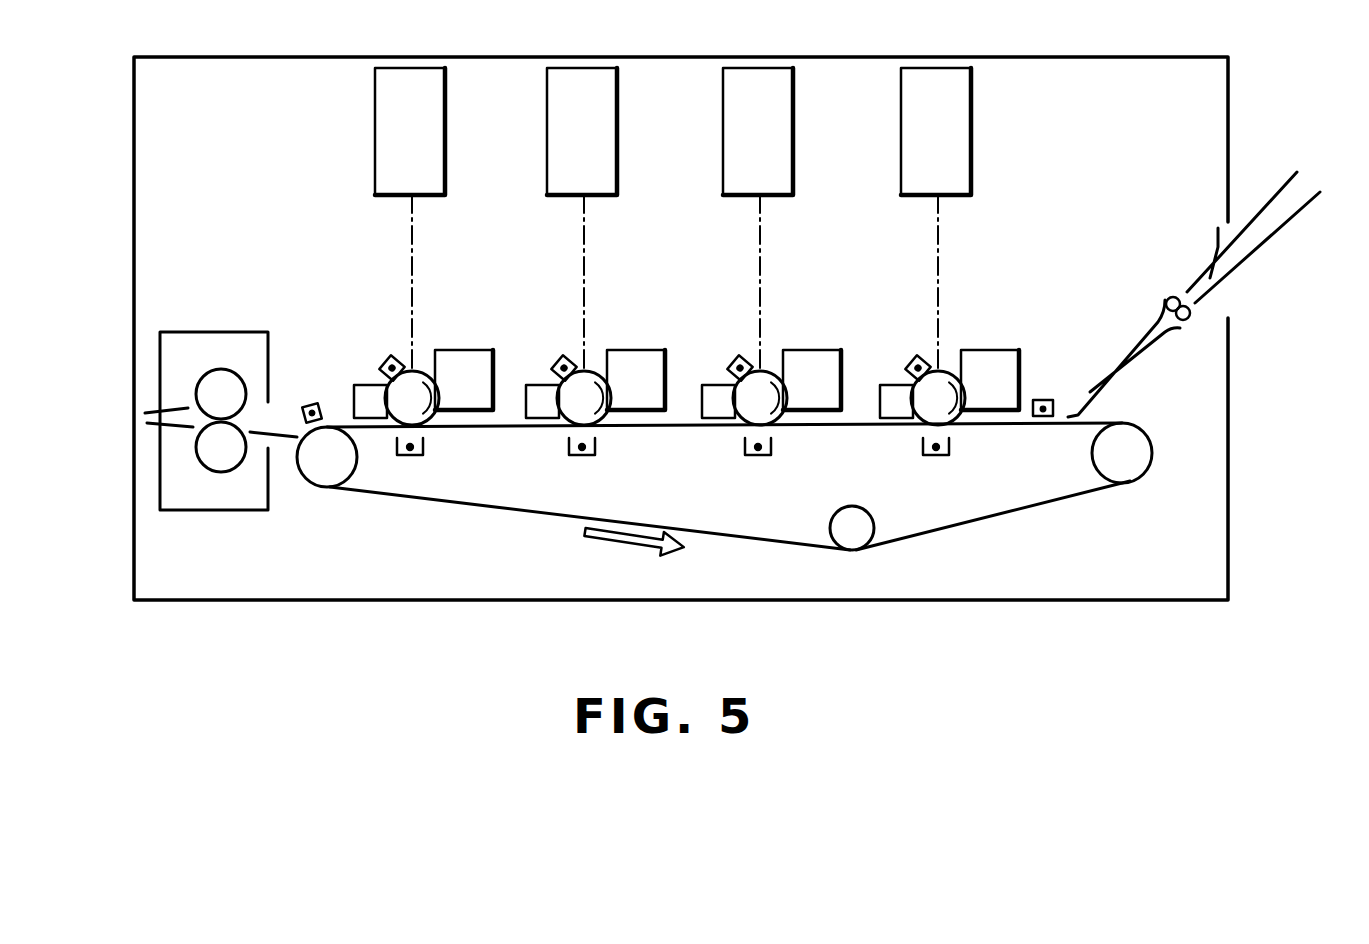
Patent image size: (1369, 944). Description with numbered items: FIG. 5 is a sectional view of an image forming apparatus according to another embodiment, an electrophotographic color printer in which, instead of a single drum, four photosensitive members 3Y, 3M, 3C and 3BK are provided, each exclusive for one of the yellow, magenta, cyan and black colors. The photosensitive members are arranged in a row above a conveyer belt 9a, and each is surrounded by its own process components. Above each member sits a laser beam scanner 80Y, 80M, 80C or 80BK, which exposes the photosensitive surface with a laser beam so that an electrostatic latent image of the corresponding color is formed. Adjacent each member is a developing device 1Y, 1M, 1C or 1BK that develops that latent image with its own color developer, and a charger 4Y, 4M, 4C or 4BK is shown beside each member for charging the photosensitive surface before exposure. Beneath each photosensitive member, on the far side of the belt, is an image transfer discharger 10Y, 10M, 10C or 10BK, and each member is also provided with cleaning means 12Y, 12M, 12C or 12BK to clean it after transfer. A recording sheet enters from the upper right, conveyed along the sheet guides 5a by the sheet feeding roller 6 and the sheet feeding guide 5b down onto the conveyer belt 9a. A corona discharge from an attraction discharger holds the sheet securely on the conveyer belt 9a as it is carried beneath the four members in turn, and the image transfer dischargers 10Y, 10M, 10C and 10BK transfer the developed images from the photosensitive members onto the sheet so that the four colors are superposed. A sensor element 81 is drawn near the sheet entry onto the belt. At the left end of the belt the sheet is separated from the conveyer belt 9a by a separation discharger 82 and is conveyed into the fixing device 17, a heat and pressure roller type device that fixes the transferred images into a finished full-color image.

The black developing device 1BK is at (478, 349).
The cyan developing device 1C is at (650, 349).
The magenta developing device 1M is at (826, 349).
The yellow developing device 1Y is at (1004, 349).
The photosensitive member 3BK is at (422, 368).
The photosensitive member 3C is at (594, 368).
The photosensitive member 3M is at (770, 368).
The photosensitive member 3Y is at (948, 368).
The black charger 4BK is at (383, 357).
The cyan charger 4C is at (555, 357).
The magenta charger 4M is at (731, 357).
The yellow charger 4Y is at (909, 357).
The image transfer discharger 10BK is at (420, 452).
The image transfer discharger 10C is at (592, 452).
The image transfer discharger 10M is at (768, 452).
The image transfer discharger 10Y is at (946, 452).
The cleaning means 12BK is at (374, 420).
The cleaning means 12C is at (546, 420).
The cleaning means 12M is at (722, 420).
The cleaning means 12Y is at (900, 420).
The laser beam scanner 80BK is at (445, 147).
The laser beam scanner 80C is at (617, 147).
The laser beam scanner 80M is at (793, 147).
The laser beam scanner 80Y is at (971, 147).
The fixing device 17 is at (223, 369).
The separation discharger 82 is at (314, 400).
The sensor 81 is at (1046, 399).
The conveyer belt 9a is at (1050, 501).
The sheet guides 5a is at (1262, 248).
The sheet feeding guide 5b is at (1137, 360).
The sheet feeding roller 6 is at (1170, 297).